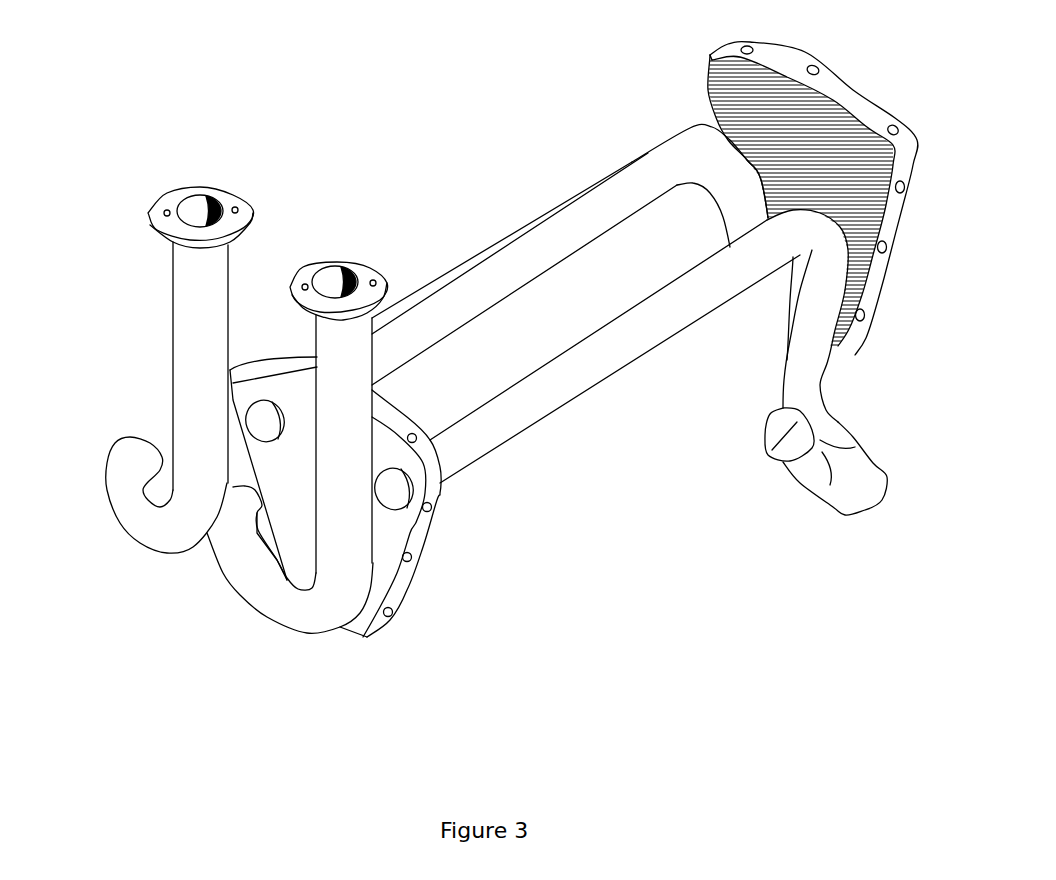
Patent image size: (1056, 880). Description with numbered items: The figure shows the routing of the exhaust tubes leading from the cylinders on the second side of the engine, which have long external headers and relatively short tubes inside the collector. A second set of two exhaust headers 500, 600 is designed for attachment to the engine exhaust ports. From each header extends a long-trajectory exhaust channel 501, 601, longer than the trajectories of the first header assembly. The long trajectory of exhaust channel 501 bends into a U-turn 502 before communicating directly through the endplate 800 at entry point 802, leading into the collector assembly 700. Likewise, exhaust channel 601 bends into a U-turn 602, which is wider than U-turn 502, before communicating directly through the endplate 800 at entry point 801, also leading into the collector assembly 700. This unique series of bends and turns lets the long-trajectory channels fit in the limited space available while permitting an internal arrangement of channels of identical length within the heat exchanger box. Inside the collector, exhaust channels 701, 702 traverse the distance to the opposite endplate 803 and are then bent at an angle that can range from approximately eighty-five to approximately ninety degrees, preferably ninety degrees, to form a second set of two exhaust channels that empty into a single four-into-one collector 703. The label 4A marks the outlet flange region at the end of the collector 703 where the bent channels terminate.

The exhaust header 500 is at (165, 212).
The exhaust channel 501 is at (190, 372).
The U-turn 502 is at (133, 528).
The exhaust header 600 is at (374, 281).
The exhaust channel 601 is at (360, 507).
The U-turn 602 is at (270, 592).
The collector assembly 700 is at (517, 187).
The exhaust channel 701 is at (520, 273).
The exhaust channel 702 is at (623, 357).
The 4-into-1 collector 703 is at (880, 478).
The outlet flange (section 4A) 4A is at (800, 257).
The endplate 800 is at (365, 637).
The entry point 801 is at (405, 493).
The entry point 802 is at (257, 410).
The endplate 803 is at (877, 102).